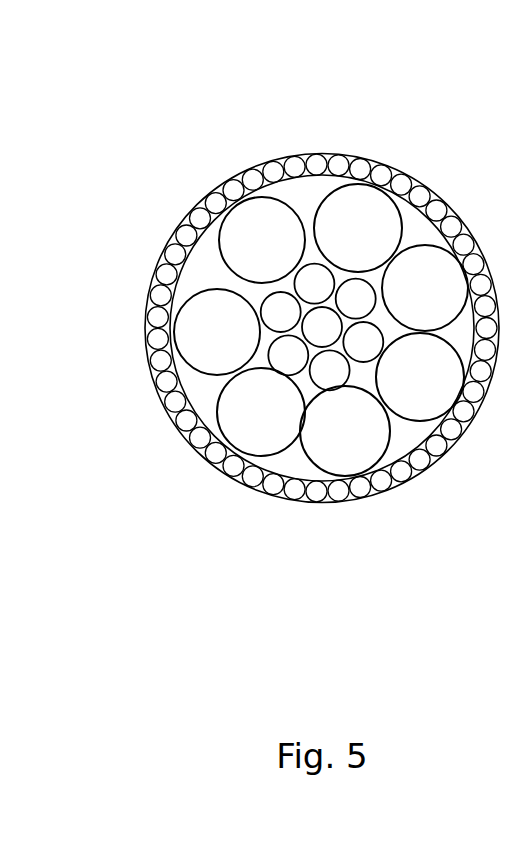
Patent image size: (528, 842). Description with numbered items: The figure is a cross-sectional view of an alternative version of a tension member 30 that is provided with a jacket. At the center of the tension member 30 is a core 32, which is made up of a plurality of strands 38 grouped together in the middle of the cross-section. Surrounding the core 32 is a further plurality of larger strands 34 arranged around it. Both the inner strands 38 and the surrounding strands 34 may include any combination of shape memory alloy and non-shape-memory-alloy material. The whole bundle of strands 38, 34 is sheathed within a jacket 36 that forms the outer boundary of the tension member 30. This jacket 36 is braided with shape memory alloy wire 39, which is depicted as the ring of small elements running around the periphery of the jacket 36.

The tension member 30 is at (307, 84).
The core 32 is at (255, 280).
The strands 34 is at (237, 407).
The jacket 36 is at (285, 495).
The strands 38 is at (315, 280).
The SMA wire 39 is at (383, 493).